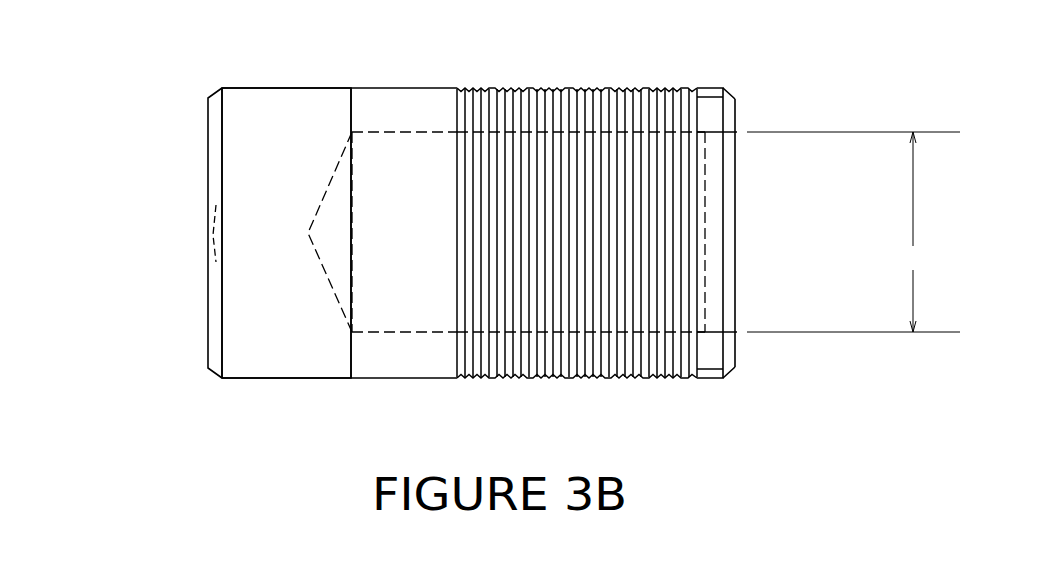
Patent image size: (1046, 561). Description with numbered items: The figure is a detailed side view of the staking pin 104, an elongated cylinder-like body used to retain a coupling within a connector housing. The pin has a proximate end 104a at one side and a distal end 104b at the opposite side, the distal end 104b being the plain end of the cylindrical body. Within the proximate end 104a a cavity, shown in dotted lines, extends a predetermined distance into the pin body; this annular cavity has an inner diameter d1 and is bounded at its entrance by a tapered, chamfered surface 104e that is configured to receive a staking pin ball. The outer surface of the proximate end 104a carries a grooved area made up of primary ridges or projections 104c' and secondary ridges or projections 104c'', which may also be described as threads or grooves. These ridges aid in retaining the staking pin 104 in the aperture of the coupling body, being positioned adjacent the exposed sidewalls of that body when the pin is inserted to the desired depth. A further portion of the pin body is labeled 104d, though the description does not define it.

The staking pin 104 is at (134, 81).
The proximate end 104a is at (713, 222).
The distal end 104b is at (208, 225).
The primary ridges or projections 104c' is at (581, 199).
The secondary ridges or projections 104c'' is at (577, 208).
The head section 104d is at (282, 88).
The tapered surface 104e is at (704, 130).
The inner diameter d1 is at (853, 232).